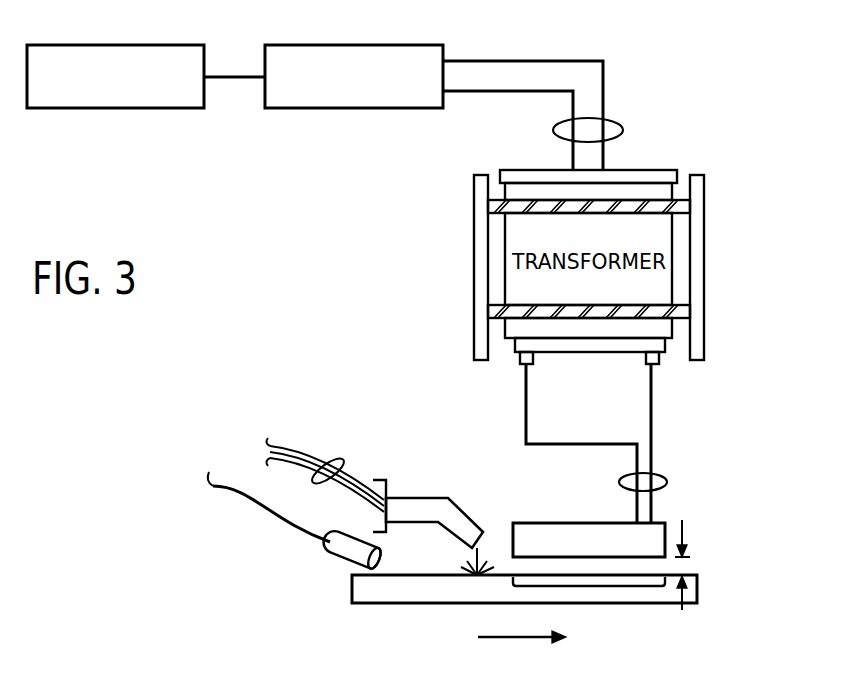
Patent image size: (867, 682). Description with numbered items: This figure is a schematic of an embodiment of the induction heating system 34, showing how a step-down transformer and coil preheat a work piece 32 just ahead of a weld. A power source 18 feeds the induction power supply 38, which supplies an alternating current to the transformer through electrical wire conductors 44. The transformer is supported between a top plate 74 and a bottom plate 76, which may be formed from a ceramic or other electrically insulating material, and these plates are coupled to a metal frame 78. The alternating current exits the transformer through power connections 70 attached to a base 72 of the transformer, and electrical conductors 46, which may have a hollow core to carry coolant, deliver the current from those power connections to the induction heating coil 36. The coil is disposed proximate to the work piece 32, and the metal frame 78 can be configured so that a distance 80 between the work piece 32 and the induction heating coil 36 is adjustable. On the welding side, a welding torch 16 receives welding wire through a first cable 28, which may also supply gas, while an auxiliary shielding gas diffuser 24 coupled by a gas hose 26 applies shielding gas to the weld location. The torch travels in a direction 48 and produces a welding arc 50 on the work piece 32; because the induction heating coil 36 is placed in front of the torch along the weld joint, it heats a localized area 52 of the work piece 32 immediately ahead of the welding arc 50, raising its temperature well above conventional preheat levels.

The welding torch 16 is at (415, 497).
The power source 18 is at (116, 45).
The auxiliary shielding gas diffuser 24 is at (350, 563).
The gas hose 26 is at (273, 521).
The first cable 28 is at (337, 463).
The work piece 32 is at (415, 604).
The induction heating system 34 is at (706, 85).
The induction heating coil 36 is at (590, 521).
The induction power supply 38 is at (355, 45).
The electrical wire conductors 44 is at (613, 122).
The electrical conductors 46 is at (666, 479).
The direction 48 is at (514, 640).
The welding arc 50 is at (486, 549).
The localized area 52 is at (588, 586).
The power connections 70 is at (533, 356).
The base 72 is at (512, 340).
The top plate 74 is at (674, 200).
The bottom plate 76 is at (676, 320).
The metal frame 78 is at (474, 268).
The distance 80 is at (684, 569).